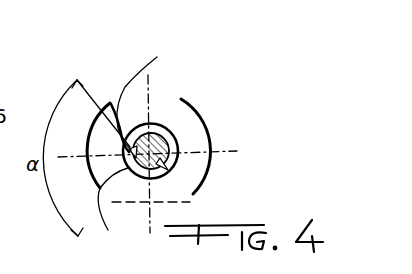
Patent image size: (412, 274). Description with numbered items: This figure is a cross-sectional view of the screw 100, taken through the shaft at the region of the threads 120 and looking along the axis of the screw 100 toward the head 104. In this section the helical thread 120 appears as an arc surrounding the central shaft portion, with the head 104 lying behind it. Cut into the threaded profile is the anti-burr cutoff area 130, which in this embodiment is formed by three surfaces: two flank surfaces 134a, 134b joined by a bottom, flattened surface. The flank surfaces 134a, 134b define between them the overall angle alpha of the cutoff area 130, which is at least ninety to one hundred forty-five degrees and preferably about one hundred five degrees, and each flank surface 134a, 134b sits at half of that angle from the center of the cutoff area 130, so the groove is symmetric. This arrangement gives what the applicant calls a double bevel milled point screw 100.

The screw 100 is at (210, 107).
The head 104 is at (192, 190).
The threads 120 is at (163, 129).
The anti-burr cutoff area 130 is at (111, 104).
The first flank surface 134a is at (131, 163).
The second flank surface 134b is at (148, 92).